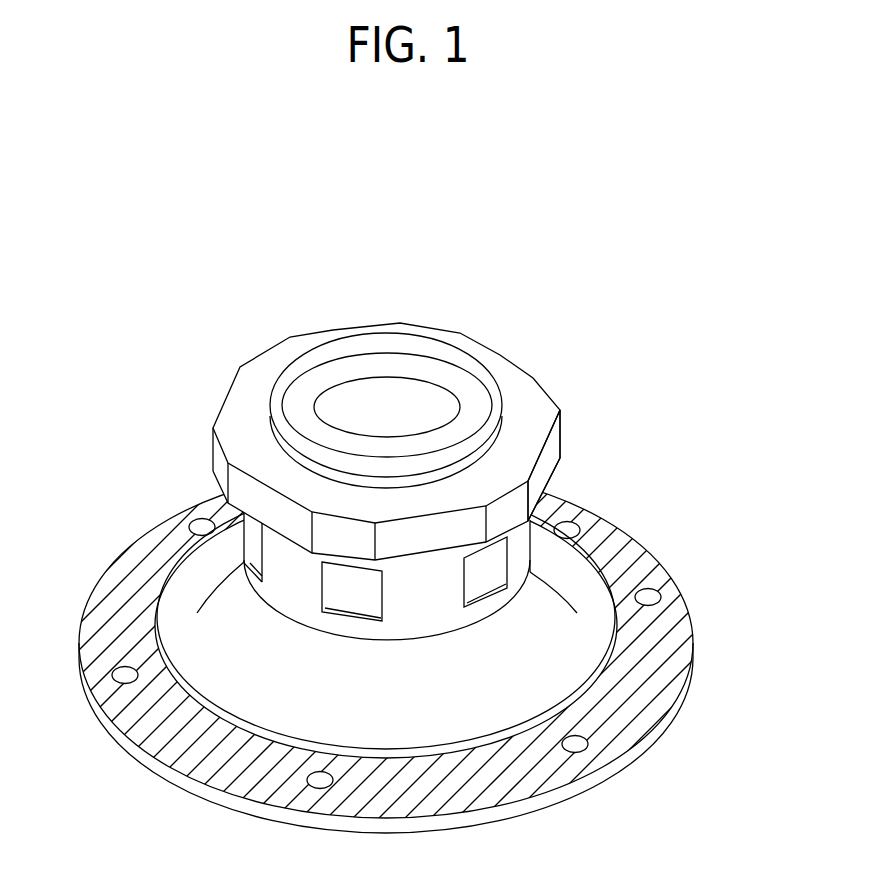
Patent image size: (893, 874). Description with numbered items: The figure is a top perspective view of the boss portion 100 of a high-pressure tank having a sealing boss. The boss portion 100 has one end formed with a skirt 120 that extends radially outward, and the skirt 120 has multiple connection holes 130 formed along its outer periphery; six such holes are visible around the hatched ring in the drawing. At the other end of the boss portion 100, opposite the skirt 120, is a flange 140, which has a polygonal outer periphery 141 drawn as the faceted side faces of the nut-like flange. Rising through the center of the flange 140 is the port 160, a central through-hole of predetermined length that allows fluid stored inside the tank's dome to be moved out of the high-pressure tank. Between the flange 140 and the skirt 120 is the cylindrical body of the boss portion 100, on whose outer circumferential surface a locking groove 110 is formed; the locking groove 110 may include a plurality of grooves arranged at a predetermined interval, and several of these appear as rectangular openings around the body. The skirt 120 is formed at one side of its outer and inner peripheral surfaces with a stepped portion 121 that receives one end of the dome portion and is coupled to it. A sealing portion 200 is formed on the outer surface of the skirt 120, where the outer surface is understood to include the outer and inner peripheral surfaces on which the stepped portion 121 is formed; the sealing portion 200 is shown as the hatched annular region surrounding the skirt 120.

The boss portion 100 is at (380, 548).
The locking groove 110 is at (489, 573).
The skirt 120 is at (253, 690).
The stepped portion 121 is at (150, 728).
The connection holes 130 is at (575, 745).
The flange 140 is at (510, 371).
The polygonal outer periphery 141 is at (543, 463).
The port 160 is at (390, 396).
The sealing portion 200 is at (663, 698).